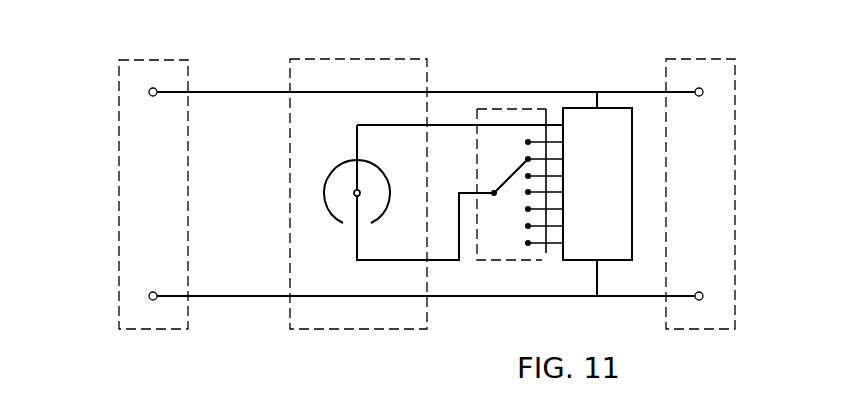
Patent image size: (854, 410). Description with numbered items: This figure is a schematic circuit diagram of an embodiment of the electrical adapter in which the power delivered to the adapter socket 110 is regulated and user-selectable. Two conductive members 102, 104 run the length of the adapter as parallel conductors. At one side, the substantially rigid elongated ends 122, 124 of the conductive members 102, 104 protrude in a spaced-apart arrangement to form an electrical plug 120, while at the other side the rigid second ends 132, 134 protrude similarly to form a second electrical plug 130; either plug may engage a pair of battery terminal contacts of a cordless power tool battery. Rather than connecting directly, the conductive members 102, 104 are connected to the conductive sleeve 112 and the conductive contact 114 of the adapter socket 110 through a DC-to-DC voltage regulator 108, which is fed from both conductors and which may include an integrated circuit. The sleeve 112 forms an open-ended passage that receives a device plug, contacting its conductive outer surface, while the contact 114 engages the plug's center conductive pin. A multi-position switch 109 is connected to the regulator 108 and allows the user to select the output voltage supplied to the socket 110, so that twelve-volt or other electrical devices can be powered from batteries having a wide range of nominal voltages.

The conductive member 102 is at (262, 92).
The conductive member 104 is at (268, 296).
The DC-to-DC voltage regulator 108 is at (617, 207).
The multi-position switch 109 is at (495, 260).
The adapter socket 110 is at (340, 329).
The conductive sleeve 112 is at (333, 167).
The conductive contact 114 is at (357, 193).
The electrical plug 120 is at (118, 263).
The elongated end 122 is at (170, 92).
The elongated end 124 is at (172, 296).
The electrical plug 130 is at (735, 207).
The second end 132 is at (682, 92).
The second end 134 is at (690, 329).